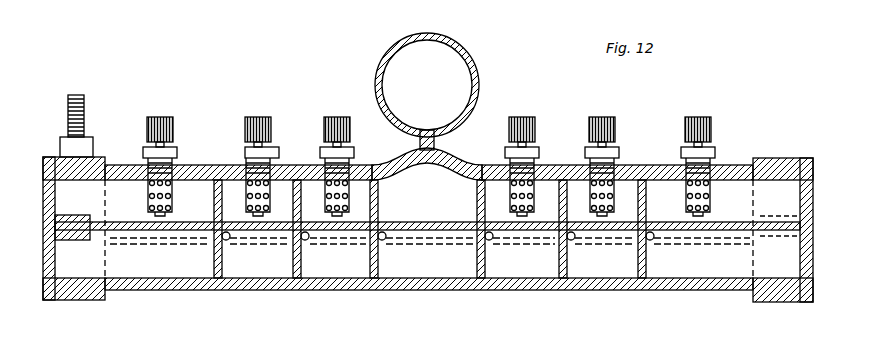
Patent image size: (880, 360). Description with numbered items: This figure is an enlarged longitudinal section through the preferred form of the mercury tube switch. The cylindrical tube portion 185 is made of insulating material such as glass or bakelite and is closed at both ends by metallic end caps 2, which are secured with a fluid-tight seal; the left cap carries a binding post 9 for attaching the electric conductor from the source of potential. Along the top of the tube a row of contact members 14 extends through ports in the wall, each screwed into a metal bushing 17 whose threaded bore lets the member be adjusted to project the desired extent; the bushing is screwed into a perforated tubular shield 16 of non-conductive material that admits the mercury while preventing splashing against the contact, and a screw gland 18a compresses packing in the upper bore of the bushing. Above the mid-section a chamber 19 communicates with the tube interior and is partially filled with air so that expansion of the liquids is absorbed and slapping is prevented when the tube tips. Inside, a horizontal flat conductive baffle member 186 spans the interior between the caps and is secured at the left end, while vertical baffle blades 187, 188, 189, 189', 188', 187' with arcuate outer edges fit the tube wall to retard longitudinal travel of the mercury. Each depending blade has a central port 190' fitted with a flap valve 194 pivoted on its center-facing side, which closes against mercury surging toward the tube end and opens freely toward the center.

The end cap 2 is at (92, 300).
The binding post 9 is at (84, 115).
The contact member 14 is at (198, 215).
The tubular shield 16 is at (146, 200).
The metal bushing 17 is at (143, 160).
The screw gland 18a is at (322, 150).
The chamber 19 is at (474, 90).
The cylindrical tube portion 185 is at (640, 178).
The baffle member 186 is at (170, 232).
The baffle blade 187 is at (208, 246).
The baffle blade 188 is at (310, 246).
The baffle blade 189 is at (371, 246).
The baffle blade 189' is at (487, 247).
The baffle blade 188' is at (567, 247).
The baffle blade 187' is at (647, 247).
The port 190' is at (161, 261).
The flap valve 194 is at (296, 252).